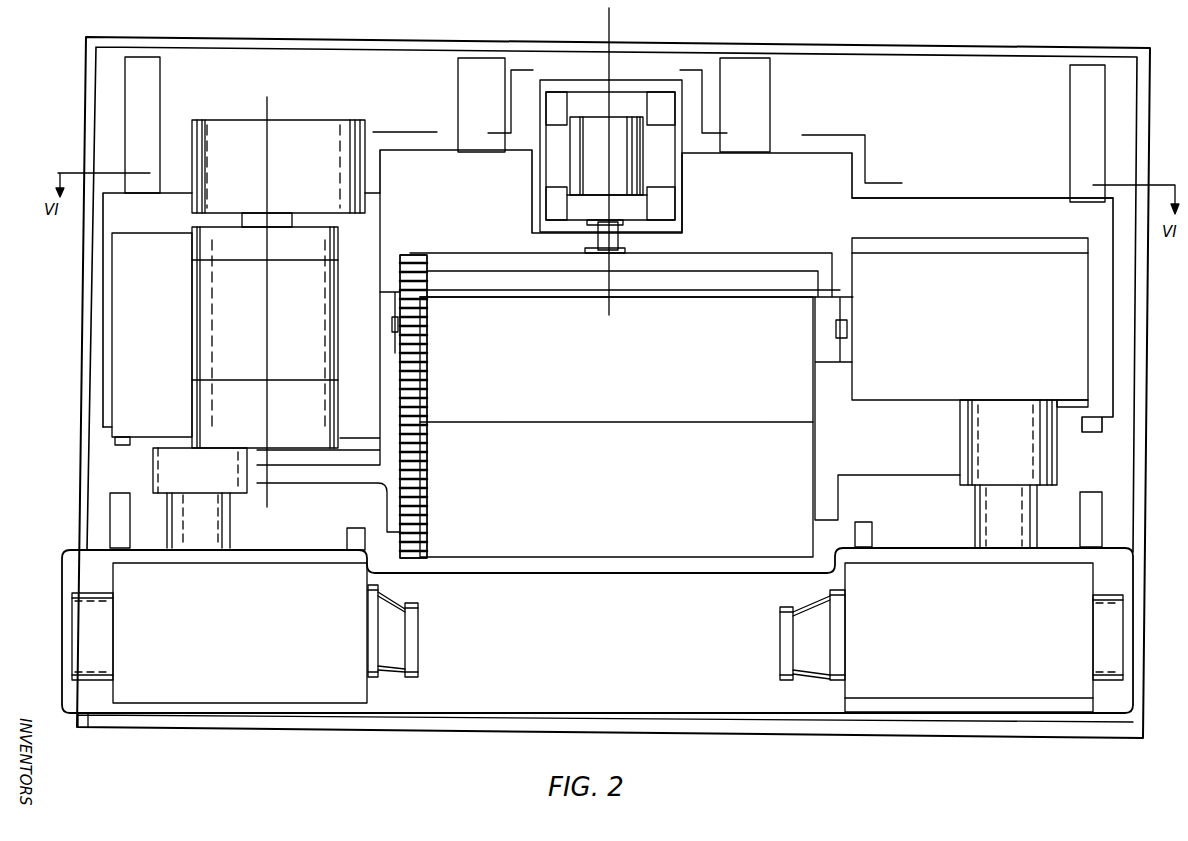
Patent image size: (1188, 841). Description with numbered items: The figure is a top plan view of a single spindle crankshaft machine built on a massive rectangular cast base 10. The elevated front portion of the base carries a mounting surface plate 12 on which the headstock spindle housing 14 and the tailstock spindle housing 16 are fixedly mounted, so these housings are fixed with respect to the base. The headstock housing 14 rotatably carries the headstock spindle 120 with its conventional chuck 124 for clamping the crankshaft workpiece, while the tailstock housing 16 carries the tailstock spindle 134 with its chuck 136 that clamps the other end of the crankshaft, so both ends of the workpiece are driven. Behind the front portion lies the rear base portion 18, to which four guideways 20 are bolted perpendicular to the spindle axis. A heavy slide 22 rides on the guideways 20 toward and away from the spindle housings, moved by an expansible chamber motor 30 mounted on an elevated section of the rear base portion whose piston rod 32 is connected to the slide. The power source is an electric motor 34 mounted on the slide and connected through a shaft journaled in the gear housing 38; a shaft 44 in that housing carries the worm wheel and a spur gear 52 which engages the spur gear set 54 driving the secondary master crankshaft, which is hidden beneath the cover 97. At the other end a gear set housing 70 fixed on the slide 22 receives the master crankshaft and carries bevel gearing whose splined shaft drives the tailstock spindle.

The cast base 10 is at (903, 47).
The mounting surface plate 12 is at (597, 609).
The headstock spindle housing 14 is at (219, 633).
The tailstock spindle housing 16 is at (984, 637).
The rear base portion 18 is at (608, 301).
The guideways 20 is at (161, 110).
The slide 22 is at (980, 213).
The expansible chamber motor 30 is at (643, 150).
The piston rod 32 is at (625, 250).
The electric motor 34 is at (259, 302).
The gear housing 38 is at (152, 335).
The shaft 44 is at (393, 353).
The spur gear 52 is at (401, 231).
The spur gear set 54 is at (428, 478).
The gear set housing 70 is at (970, 361).
The cover 97 is at (631, 405).
The headstock spindle 120 is at (376, 680).
The chuck 124 is at (418, 647).
The tailstock spindle 134 is at (835, 682).
The chuck 136 is at (782, 660).